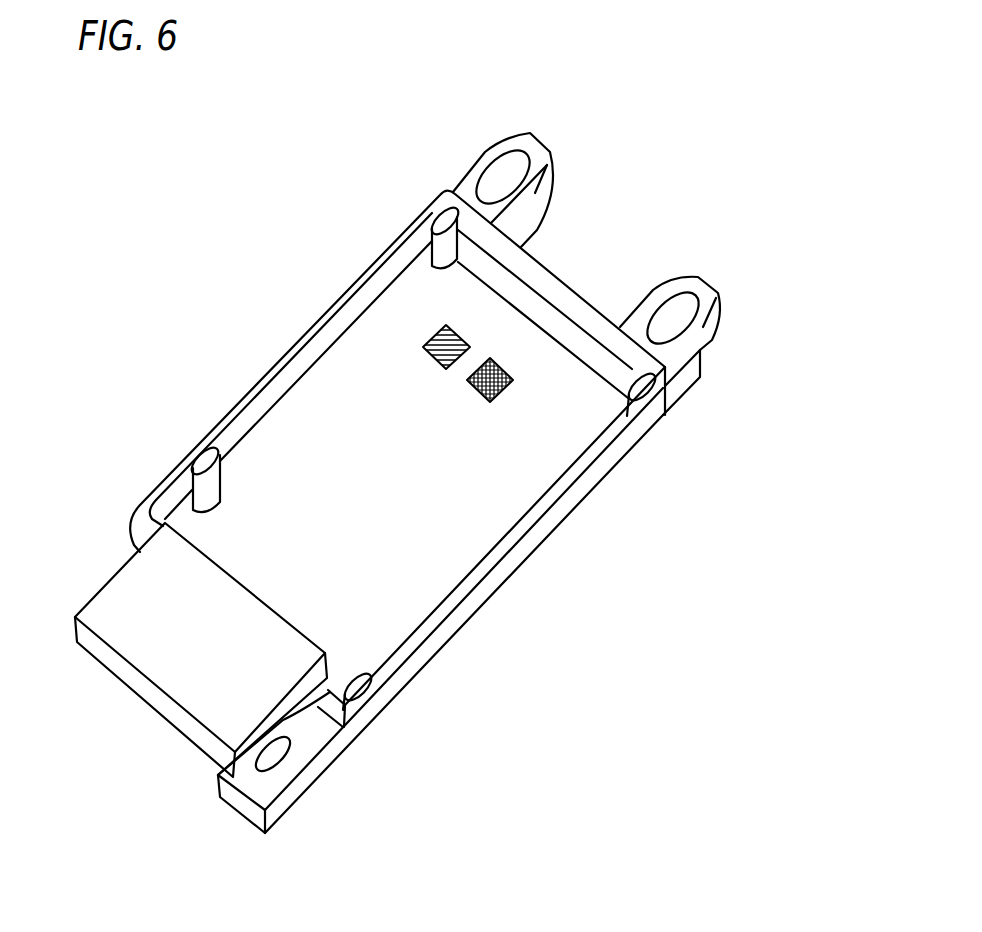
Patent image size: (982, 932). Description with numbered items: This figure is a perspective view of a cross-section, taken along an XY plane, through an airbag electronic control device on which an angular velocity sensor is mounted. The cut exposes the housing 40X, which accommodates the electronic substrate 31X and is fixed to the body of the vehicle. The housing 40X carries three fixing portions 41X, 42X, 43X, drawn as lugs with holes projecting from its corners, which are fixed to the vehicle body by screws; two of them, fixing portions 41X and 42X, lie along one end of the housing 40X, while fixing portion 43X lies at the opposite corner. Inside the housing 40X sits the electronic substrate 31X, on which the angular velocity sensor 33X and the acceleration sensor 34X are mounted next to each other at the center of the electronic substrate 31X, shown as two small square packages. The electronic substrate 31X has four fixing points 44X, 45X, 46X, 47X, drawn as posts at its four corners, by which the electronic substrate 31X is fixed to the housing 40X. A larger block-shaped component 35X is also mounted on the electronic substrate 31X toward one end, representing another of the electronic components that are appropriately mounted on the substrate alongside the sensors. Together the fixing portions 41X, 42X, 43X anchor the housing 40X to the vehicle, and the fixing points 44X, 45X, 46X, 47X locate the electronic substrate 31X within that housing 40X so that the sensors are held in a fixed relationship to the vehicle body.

The electronic substrate 31X is at (487, 515).
The angular velocity sensor 33X is at (438, 340).
The acceleration sensor 34X is at (502, 372).
The electronic component block 35X is at (132, 597).
The housing 40X is at (608, 458).
The fixing portion 41X is at (507, 180).
The fixing portion 42X is at (680, 308).
The fixing portion 43X is at (270, 752).
The fixing point 44X is at (440, 222).
The fixing point 45X is at (650, 388).
The fixing point 46X is at (372, 678).
The fixing point 47X is at (205, 460).